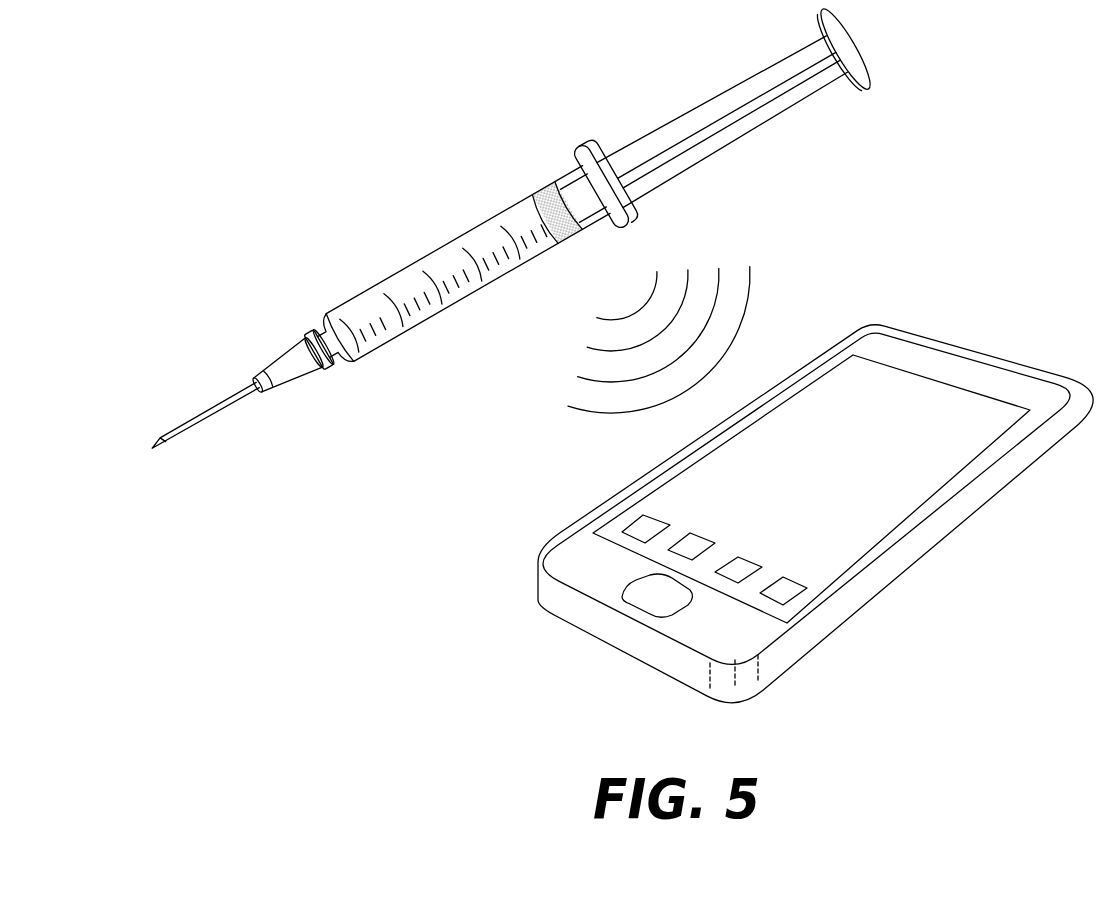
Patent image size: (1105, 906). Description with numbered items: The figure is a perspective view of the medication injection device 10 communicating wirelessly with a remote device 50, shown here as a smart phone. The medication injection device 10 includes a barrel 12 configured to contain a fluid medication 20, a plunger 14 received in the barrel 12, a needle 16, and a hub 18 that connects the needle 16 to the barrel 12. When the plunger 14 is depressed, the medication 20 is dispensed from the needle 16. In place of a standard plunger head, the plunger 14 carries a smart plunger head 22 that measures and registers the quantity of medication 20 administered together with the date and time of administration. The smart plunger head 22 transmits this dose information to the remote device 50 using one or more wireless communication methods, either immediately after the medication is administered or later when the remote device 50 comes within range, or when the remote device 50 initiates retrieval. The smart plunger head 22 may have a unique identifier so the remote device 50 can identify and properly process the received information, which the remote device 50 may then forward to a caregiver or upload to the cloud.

The medication injection device 10 is at (238, 111).
The barrel 12 is at (440, 247).
The plunger 14 is at (683, 110).
The needle 16 is at (196, 408).
The hub 18 is at (286, 350).
The medication 20 is at (368, 300).
The smart plunger head 22 is at (539, 190).
The remote device 50 is at (985, 330).